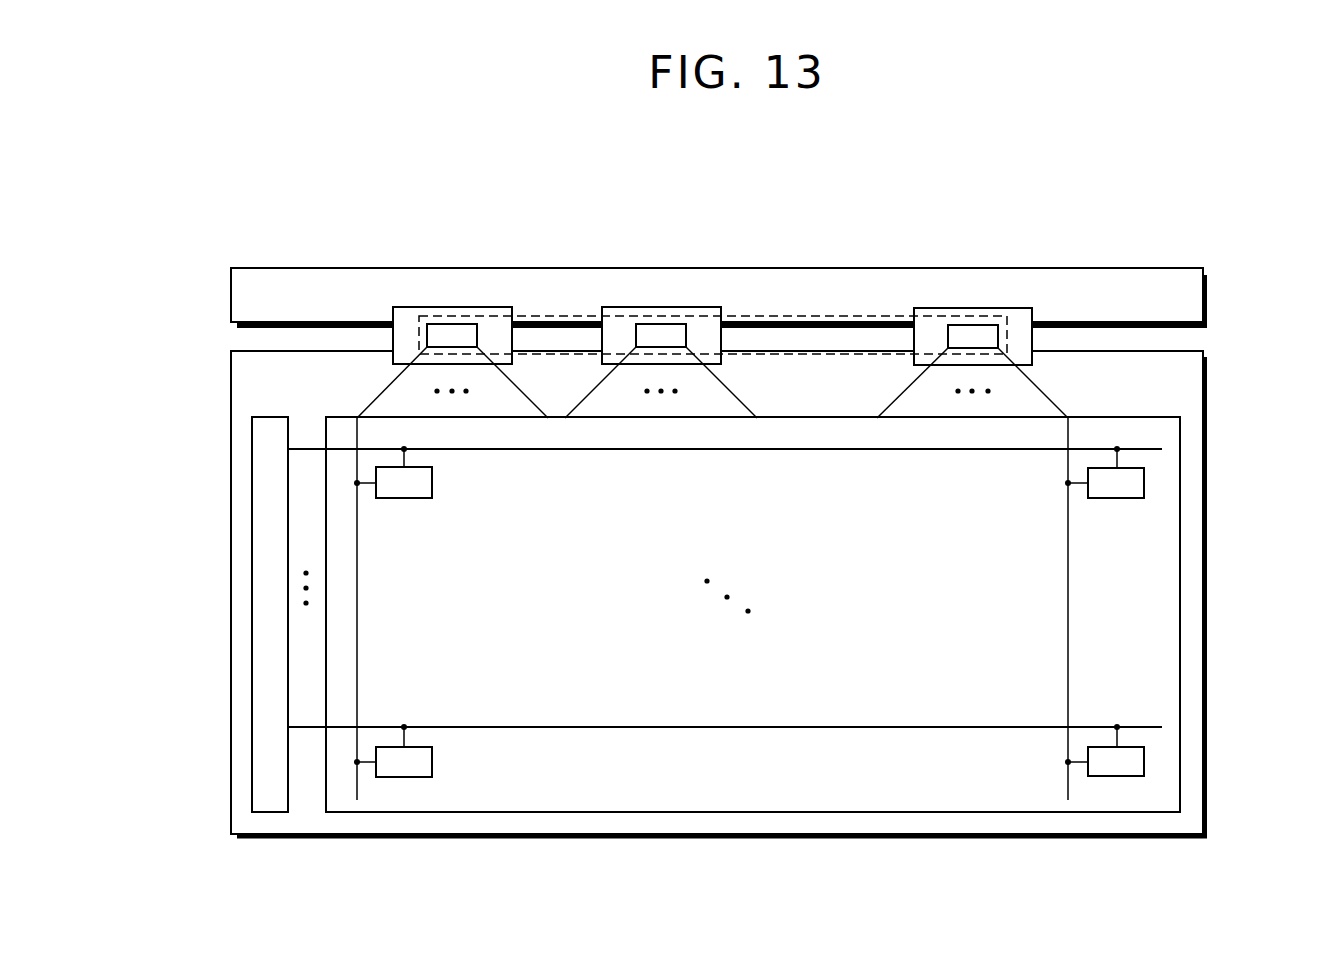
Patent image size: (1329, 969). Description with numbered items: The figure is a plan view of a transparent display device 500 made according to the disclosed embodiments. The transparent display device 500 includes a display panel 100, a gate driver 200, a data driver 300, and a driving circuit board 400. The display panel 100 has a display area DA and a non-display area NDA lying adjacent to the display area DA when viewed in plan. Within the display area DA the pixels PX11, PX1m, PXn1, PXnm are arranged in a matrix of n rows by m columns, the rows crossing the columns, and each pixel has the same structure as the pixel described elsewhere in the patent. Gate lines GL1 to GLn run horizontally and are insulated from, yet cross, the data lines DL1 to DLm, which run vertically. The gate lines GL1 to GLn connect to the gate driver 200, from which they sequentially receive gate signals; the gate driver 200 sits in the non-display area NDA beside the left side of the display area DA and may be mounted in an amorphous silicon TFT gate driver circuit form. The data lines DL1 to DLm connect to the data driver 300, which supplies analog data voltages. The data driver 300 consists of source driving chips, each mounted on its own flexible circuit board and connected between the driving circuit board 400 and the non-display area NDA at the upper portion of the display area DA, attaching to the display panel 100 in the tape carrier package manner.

The transparent display device 500 is at (1153, 203).
The driving circuit board 400 is at (1207, 293).
The display panel 100 is at (1207, 383).
The data driver 300 is at (807, 316).
The gate driver 200 is at (250, 652).
The non-display area NDA is at (241, 525).
The display area DA is at (1180, 622).
The gate line GL1 is at (577, 451).
The gate line GLn is at (580, 725).
The data line DL1 is at (357, 608).
The data line DLm is at (1068, 610).
The pixel PX11 is at (393, 472).
The pixel PX1m is at (1104, 472).
The pixel PXn1 is at (393, 750).
The pixel PXnm is at (1104, 750).